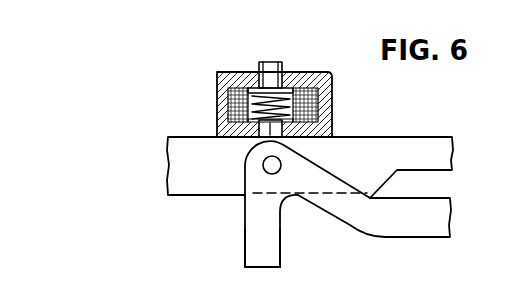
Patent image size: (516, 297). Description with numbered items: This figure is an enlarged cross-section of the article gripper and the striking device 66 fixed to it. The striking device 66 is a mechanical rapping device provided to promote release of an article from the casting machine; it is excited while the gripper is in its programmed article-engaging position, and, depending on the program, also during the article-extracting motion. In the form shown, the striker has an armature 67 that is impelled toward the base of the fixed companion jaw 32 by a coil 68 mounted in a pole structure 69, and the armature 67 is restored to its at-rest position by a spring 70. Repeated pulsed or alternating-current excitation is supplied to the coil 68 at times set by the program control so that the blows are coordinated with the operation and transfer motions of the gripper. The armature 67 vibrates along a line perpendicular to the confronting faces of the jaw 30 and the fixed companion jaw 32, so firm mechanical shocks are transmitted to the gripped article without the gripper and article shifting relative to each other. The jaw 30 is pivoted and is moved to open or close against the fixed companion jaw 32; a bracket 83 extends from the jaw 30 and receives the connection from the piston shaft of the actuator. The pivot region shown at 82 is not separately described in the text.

The striking device 66 is at (262, 80).
The armature 67 is at (277, 63).
The coil 68 is at (250, 117).
The pole structure 69 is at (328, 97).
The spring 70 is at (252, 113).
The fixed companion jaw 32 is at (428, 145).
The jaw 30 is at (317, 214).
The pivot hole 82 is at (268, 168).
The bracket 83 is at (250, 252).